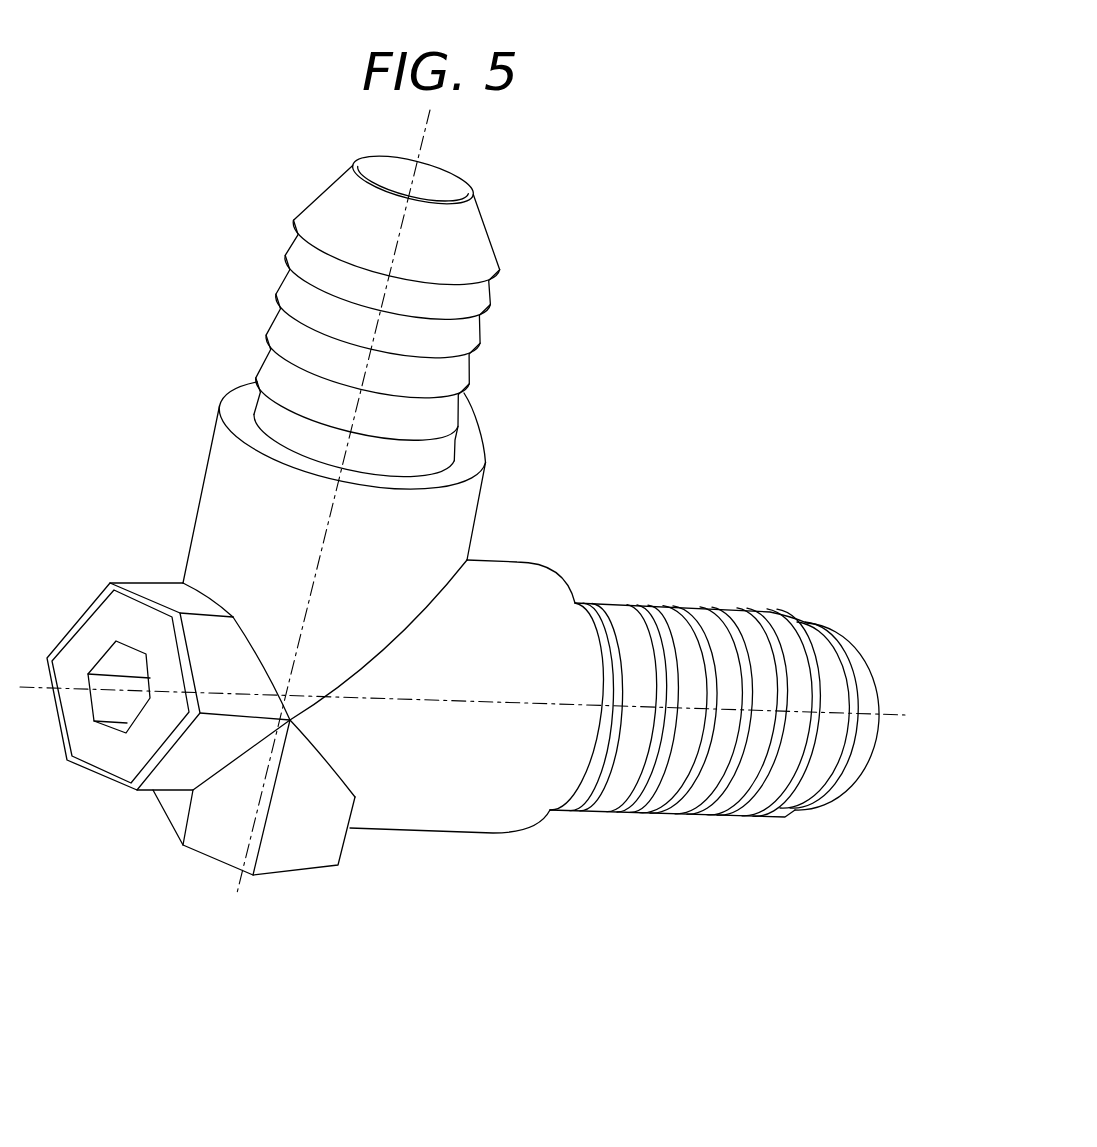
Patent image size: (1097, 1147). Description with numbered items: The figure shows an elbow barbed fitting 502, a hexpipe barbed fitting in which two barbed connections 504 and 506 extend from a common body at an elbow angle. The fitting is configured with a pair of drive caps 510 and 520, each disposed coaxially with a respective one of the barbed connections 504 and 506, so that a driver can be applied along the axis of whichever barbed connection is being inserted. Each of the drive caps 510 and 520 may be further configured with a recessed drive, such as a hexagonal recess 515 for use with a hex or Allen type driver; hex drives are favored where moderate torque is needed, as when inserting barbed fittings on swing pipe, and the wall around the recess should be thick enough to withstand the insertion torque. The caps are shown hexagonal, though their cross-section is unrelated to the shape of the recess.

The elbow barbed fitting 502 is at (629, 346).
The barbed connection 504 is at (737, 610).
The barbed connection 506 is at (480, 368).
The drive cap 510 is at (168, 650).
The hex socket 515 is at (115, 641).
The drive cap 520 is at (302, 895).